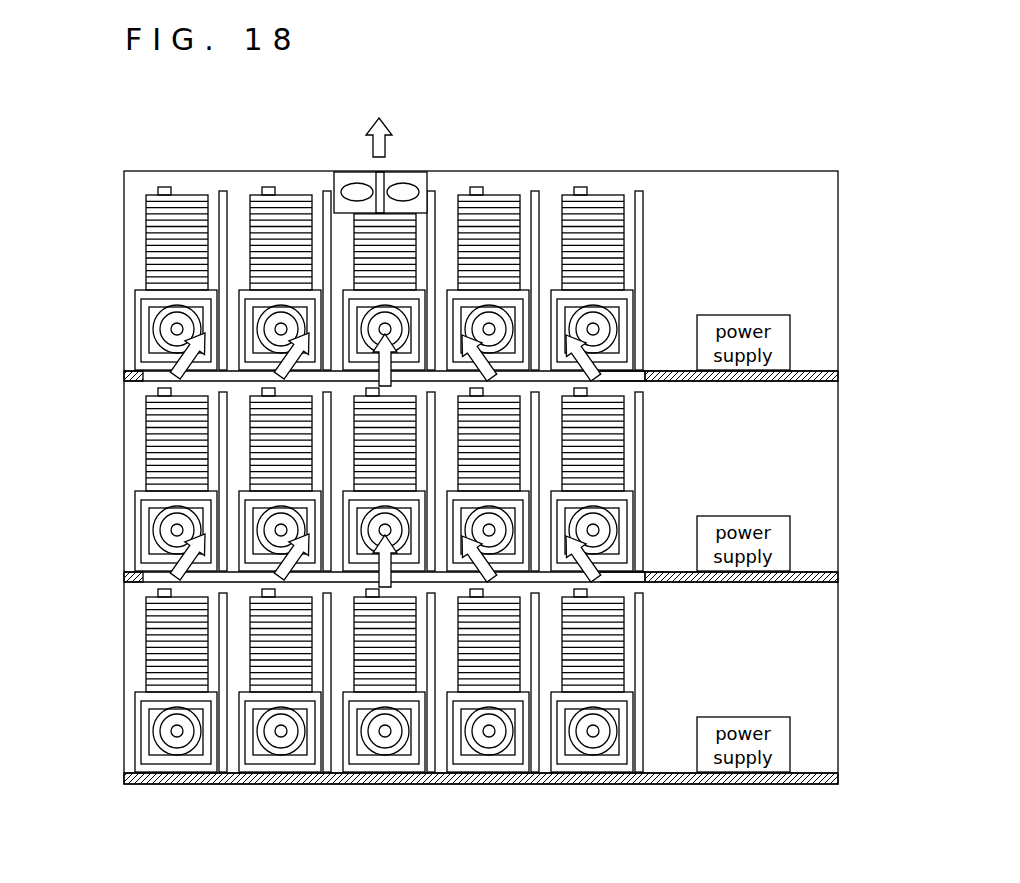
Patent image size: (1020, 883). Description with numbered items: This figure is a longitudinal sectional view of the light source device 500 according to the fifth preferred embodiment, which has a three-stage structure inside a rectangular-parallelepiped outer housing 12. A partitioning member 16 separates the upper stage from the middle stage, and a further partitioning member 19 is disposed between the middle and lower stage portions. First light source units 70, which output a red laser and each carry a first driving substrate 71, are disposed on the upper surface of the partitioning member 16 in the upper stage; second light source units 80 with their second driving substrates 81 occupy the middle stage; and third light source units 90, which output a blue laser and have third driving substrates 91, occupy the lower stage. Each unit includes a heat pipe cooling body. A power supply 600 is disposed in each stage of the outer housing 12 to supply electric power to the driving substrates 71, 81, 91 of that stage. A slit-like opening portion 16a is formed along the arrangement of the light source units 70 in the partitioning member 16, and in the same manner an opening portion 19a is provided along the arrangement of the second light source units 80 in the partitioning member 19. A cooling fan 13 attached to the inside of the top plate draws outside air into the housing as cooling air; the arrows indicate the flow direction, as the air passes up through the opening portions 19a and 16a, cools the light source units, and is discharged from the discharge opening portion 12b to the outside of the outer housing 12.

The light source device 500 is at (450, 449).
The outer housing 12 is at (724, 171).
The discharge opening portion 12b is at (413, 172).
The cooling fan 13 is at (354, 190).
The first light source unit 70 is at (142, 245).
The first driving substrate 71 is at (224, 190).
The partitioning member 16 is at (123, 377).
The opening portion 16a is at (623, 370).
The power supply 600 is at (745, 315).
The second light source unit 80 is at (142, 447).
The second driving substrate 81 is at (224, 412).
The partitioning member 19 is at (123, 578).
The opening portion 19a is at (623, 571).
The third light source unit 90 is at (142, 655).
The third driving substrate 91 is at (220, 784).